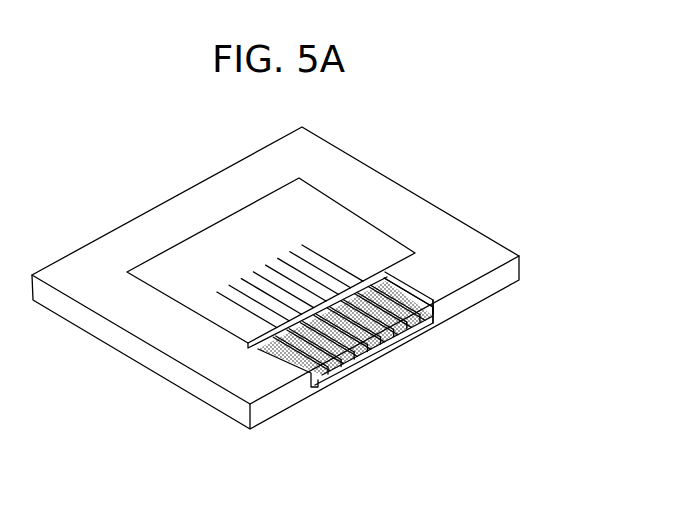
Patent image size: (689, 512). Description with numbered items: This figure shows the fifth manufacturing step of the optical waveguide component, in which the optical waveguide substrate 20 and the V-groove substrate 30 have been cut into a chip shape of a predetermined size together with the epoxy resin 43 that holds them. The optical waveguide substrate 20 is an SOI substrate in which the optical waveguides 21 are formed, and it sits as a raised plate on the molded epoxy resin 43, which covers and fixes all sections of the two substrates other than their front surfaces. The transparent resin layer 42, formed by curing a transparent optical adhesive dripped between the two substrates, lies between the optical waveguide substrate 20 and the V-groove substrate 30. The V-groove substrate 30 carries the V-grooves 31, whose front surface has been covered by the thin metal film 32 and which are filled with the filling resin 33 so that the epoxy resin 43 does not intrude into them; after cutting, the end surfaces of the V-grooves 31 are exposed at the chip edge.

The optical waveguide substrate 20 is at (303, 204).
The optical waveguides 21 is at (332, 257).
The V-groove substrate 30 is at (327, 375).
The V-grooves 31 is at (383, 335).
The thin metal film 32 is at (430, 318).
The filling resin 33 is at (408, 296).
The transparent resin layer 42 is at (390, 272).
The epoxy resin 43 is at (152, 318).